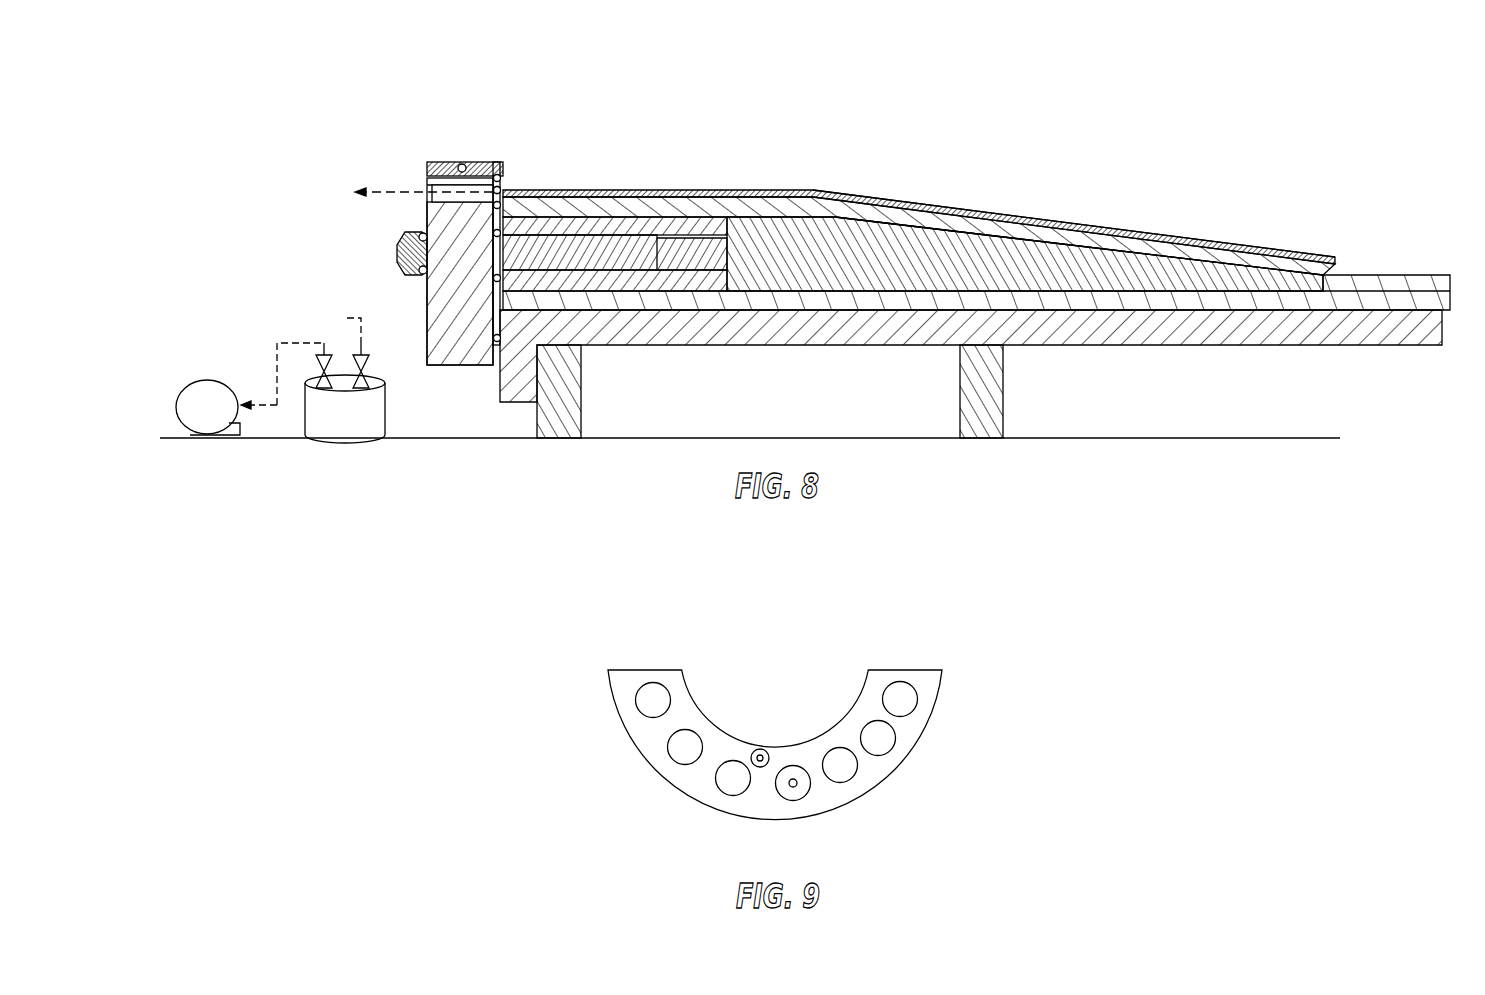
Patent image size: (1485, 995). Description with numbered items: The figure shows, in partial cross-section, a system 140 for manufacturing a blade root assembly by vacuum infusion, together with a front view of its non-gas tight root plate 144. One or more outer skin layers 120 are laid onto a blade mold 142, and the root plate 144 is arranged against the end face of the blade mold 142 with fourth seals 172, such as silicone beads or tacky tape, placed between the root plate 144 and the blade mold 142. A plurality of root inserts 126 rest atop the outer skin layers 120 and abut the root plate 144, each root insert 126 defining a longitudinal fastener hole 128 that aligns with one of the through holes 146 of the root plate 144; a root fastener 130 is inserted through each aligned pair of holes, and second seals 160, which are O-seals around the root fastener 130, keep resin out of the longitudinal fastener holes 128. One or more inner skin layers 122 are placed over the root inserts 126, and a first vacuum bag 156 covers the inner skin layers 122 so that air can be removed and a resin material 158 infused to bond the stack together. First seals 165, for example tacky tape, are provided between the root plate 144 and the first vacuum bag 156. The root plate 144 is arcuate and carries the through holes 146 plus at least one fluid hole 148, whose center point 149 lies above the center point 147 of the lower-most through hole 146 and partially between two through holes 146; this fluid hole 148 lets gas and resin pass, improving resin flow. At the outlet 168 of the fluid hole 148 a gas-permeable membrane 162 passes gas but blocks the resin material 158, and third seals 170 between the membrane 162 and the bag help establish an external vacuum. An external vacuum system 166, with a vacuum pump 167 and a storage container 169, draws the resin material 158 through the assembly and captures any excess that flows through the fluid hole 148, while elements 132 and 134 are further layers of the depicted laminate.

In FIG. 8, the outer skin layers 120 is at (1090, 303).
In FIG. 8, the inner skin layers 122 is at (1055, 242).
In FIG. 8, the root inserts 126 is at (693, 230).
In FIG. 8, the longitudinal fastener holes 128 is at (620, 273).
In FIG. 8, the root fastener 130 is at (567, 253).
In FIG. 8, the upper ply layer 132 is at (510, 223).
In FIG. 8, the skin 134 is at (1080, 270).
In FIG. 8, the system 140 is at (196, 191).
In FIG. 8, the blade mold 142 is at (1340, 350).
In FIG. 8, the root plate 144 is at (420, 340).
In FIG. 9, the root plate 144 is at (1013, 648).
In FIG. 9, the through holes 146 is at (838, 763).
In FIG. 9, the center point 147 is at (792, 790).
In FIG. 8, the fluid hole 148 is at (433, 180).
In FIG. 9, the fluid hole 148 is at (772, 752).
In FIG. 9, the center point 149 is at (759, 752).
In FIG. 8, the first vacuum bag 156 is at (1035, 218).
In FIG. 8, the resin material 158 is at (1348, 267).
In FIG. 8, the second seals 160 is at (497, 233).
In FIG. 8, the membrane 162 is at (503, 190).
In FIG. 8, the first seals 165 is at (468, 162).
In FIG. 8, the external vacuum system 166 is at (163, 368).
In FIG. 8, the vacuum pump 167 is at (190, 425).
In FIG. 8, the outlet 168 is at (498, 188).
In FIG. 8, the storage container 169 is at (320, 438).
In FIG. 8, the third seals 170 is at (505, 195).
In FIG. 8, the fourth seals 172 is at (492, 350).